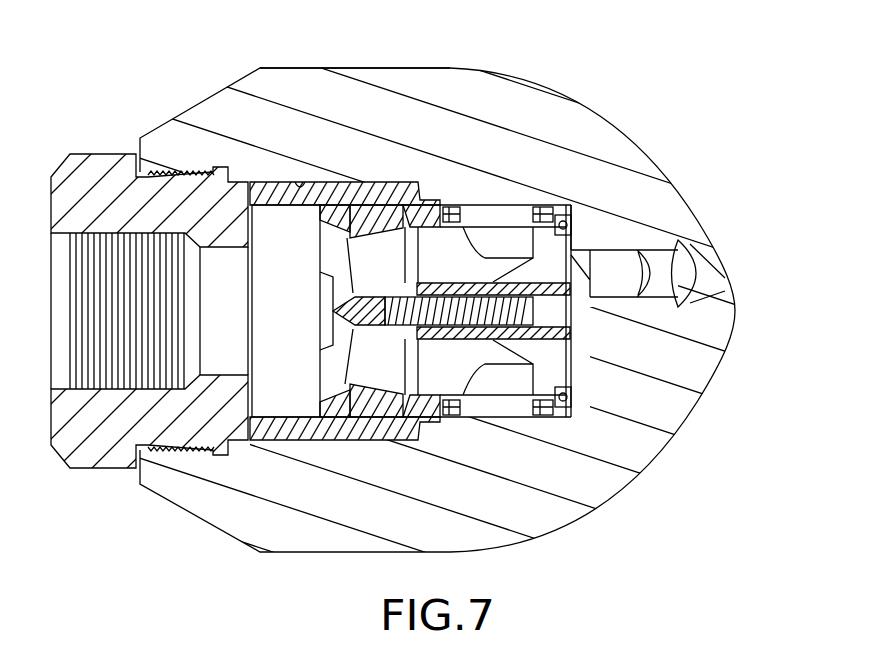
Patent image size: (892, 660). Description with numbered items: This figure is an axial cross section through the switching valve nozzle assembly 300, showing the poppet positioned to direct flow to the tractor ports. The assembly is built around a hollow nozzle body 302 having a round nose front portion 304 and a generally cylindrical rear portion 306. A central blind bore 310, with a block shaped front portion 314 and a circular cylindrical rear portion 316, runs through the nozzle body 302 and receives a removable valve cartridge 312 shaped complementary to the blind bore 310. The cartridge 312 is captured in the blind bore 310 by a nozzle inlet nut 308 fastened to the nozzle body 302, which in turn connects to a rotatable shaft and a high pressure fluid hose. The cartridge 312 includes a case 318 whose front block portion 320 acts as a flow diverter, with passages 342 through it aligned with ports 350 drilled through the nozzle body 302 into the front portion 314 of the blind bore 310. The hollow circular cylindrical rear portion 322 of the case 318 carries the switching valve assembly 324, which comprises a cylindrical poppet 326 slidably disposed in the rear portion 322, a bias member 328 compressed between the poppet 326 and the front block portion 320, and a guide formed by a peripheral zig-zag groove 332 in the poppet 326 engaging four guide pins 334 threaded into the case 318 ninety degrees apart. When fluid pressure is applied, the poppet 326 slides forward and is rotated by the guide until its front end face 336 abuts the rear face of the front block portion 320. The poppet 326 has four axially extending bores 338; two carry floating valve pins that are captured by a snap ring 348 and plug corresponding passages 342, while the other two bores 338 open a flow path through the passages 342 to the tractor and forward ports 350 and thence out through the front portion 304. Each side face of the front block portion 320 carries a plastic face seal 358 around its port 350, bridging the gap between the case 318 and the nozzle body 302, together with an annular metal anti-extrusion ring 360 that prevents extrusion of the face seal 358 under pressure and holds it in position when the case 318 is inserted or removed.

The nozzle assembly 300 is at (425, 330).
The nozzle body 302 is at (588, 94).
The round nose front portion 304 is at (670, 172).
The generally cylindrical rear portion 306 is at (341, 78).
The nozzle inlet nut 308 is at (110, 170).
The central blind bore 310 is at (344, 183).
The removable valve cartridge 312 is at (268, 170).
The block shaped front portion 314 is at (470, 207).
The circular cylindrical rear portion 316 is at (303, 183).
The case 318 is at (403, 455).
The front block portion 320 is at (560, 322).
The hollow circular cylindrical rear portion 322 is at (312, 433).
The switching valve assembly 324 is at (412, 200).
The cylindrical poppet 326 is at (373, 212).
The bias member 328 is at (572, 378).
The groove 332 is at (350, 210).
The guide pins 334 is at (327, 408).
The front end face 336 is at (403, 443).
The axially extending bores 338 is at (397, 376).
The passages 342 is at (565, 258).
The snap ring 348 is at (563, 262).
The ports 350 is at (712, 255).
The plastic face seal 358 is at (510, 413).
The anti-extrusion ring 360 is at (545, 205).